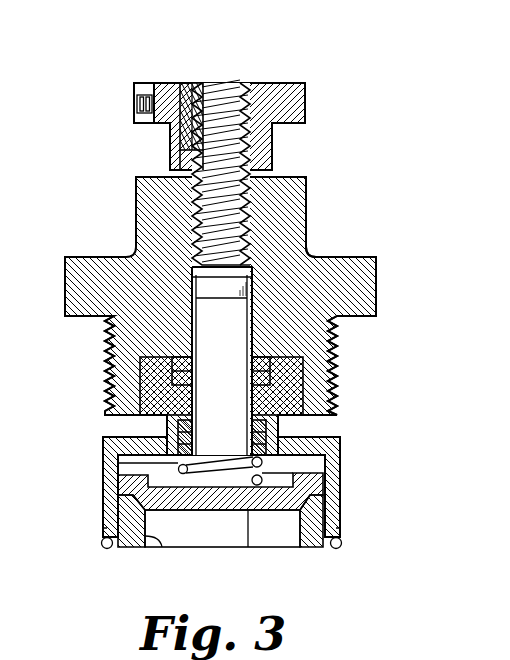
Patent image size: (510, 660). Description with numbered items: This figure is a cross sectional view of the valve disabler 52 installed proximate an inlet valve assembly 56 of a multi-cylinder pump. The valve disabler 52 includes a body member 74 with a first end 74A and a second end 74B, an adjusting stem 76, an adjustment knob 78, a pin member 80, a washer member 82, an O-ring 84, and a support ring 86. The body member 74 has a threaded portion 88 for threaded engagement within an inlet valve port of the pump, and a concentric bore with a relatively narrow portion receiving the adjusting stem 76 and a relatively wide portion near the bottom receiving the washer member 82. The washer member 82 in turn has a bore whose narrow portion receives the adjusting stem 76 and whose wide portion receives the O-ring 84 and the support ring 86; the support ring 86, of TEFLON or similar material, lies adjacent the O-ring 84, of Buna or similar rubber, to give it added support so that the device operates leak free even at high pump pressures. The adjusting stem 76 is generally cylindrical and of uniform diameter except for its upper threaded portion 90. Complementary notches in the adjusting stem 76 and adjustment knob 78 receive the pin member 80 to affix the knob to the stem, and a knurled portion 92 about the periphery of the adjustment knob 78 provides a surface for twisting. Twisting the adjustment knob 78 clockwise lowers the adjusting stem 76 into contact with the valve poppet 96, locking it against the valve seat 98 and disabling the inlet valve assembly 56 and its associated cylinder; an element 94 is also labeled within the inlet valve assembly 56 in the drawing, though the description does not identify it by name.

The valve disabler 52 is at (337, 202).
The inlet valve assembly 56 is at (86, 506).
The body member 74 is at (378, 295).
The first end 74A is at (350, 255).
The second end 74B is at (325, 415).
The adjusting stem 76 is at (245, 342).
The adjustment knob 78 is at (303, 84).
The pin member 80 is at (188, 83).
The washer member 82 is at (332, 403).
The O-ring 84 is at (300, 383).
The support ring 86 is at (270, 363).
The threaded portion 88 is at (107, 365).
The upper threaded portion 90 is at (220, 112).
The knurled portion 92 is at (133, 102).
The lever pin 94 is at (118, 464).
The valve poppet 96 is at (250, 547).
The valve seat 98 is at (163, 547).